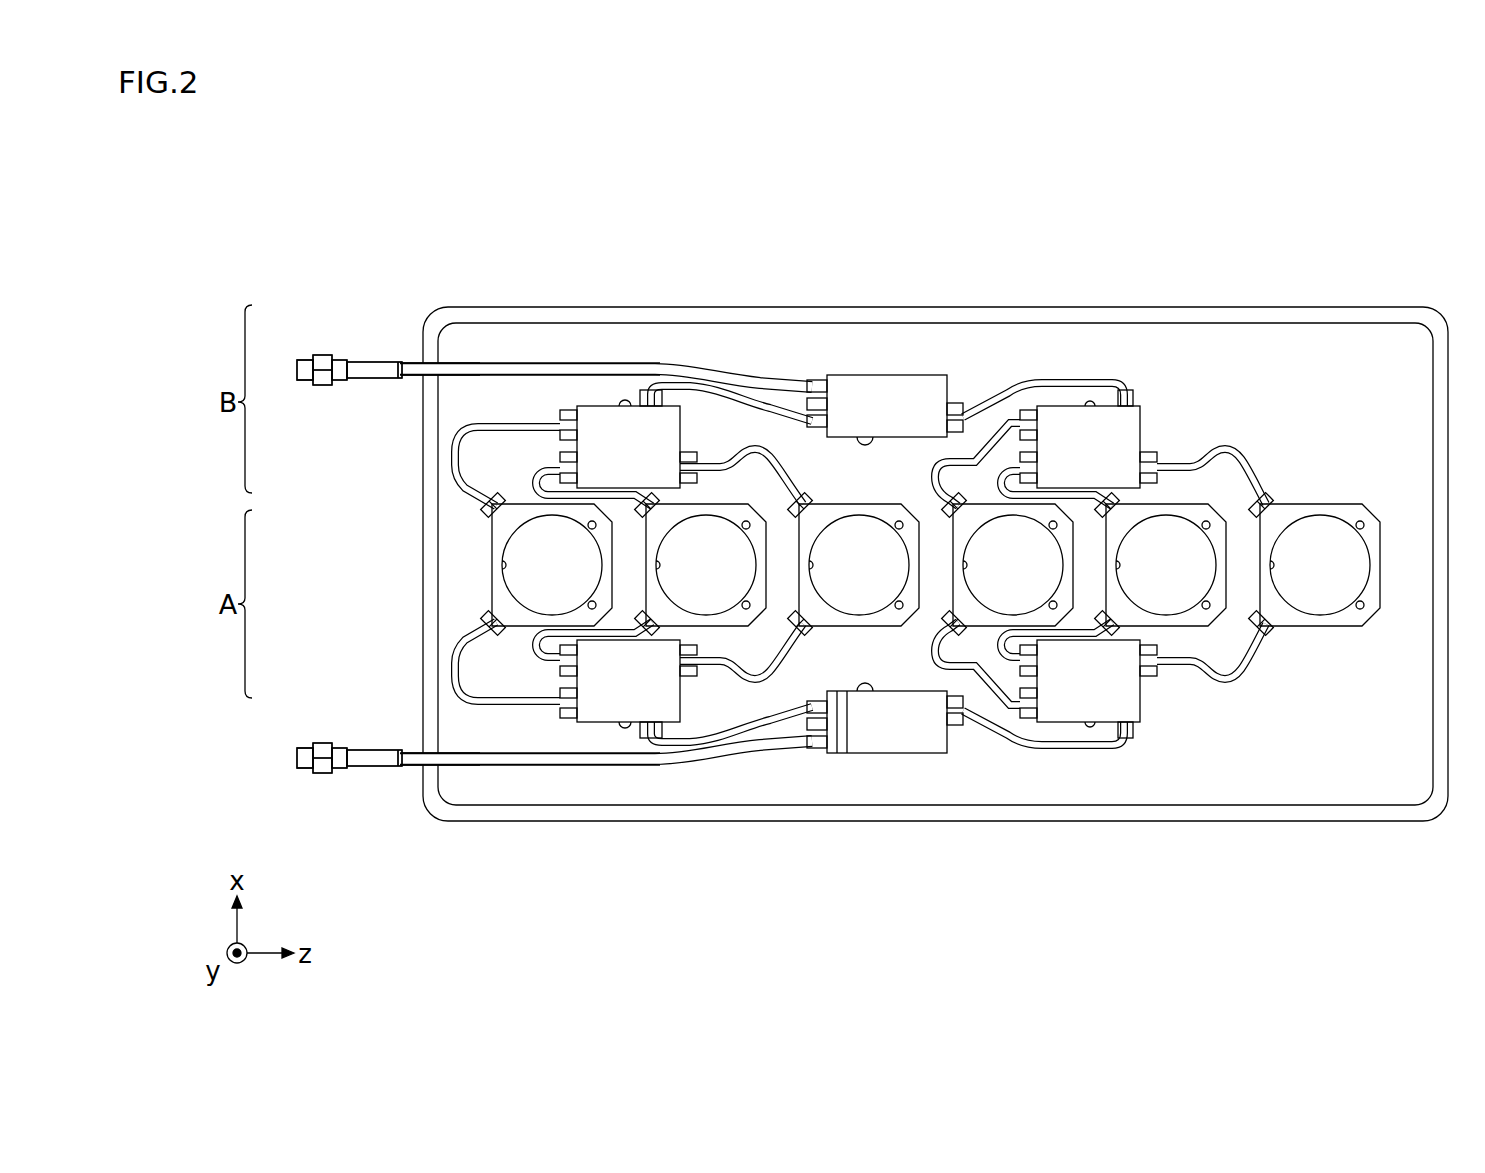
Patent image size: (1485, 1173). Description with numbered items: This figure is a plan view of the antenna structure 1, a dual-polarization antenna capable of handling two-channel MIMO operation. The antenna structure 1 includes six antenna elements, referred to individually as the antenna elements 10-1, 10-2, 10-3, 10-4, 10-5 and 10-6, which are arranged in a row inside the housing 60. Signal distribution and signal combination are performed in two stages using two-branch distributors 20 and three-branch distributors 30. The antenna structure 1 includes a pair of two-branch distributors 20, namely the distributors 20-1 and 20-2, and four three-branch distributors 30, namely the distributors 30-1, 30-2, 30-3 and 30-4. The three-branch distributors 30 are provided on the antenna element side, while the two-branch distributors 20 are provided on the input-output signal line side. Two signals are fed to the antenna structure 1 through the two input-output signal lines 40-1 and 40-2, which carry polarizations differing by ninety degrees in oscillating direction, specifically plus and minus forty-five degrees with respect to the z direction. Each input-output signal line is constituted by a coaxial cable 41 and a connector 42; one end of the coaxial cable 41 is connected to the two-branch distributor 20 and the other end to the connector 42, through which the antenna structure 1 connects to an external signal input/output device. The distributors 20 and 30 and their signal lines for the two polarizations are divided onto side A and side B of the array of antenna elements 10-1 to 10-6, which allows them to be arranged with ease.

The antenna structure 1 is at (1343, 183).
The housing 60 is at (1266, 318).
The antenna element 10-1 is at (531, 593).
The antenna element 10-2 is at (715, 593).
The antenna element 10-3 is at (843, 593).
The antenna element 10-4 is at (994, 593).
The antenna element 10-5 is at (1167, 593).
The antenna element 10-6 is at (1320, 593).
The two-branch distributor 20 is at (885, 787).
The distributor 20-1 is at (885, 735).
The distributor 20-2 is at (873, 388).
The three-branch distributor 30 is at (626, 765).
The distributor 30-1 is at (620, 697).
The distributor 30-2 is at (1068, 697).
The distributor 30-3 is at (613, 430).
The distributor 30-4 is at (1067, 427).
The input-output signal line 40-1 is at (455, 888).
The input-output signal line 40-2 is at (455, 248).
The coaxial cable 41 is at (468, 360).
The connector 42 is at (377, 360).